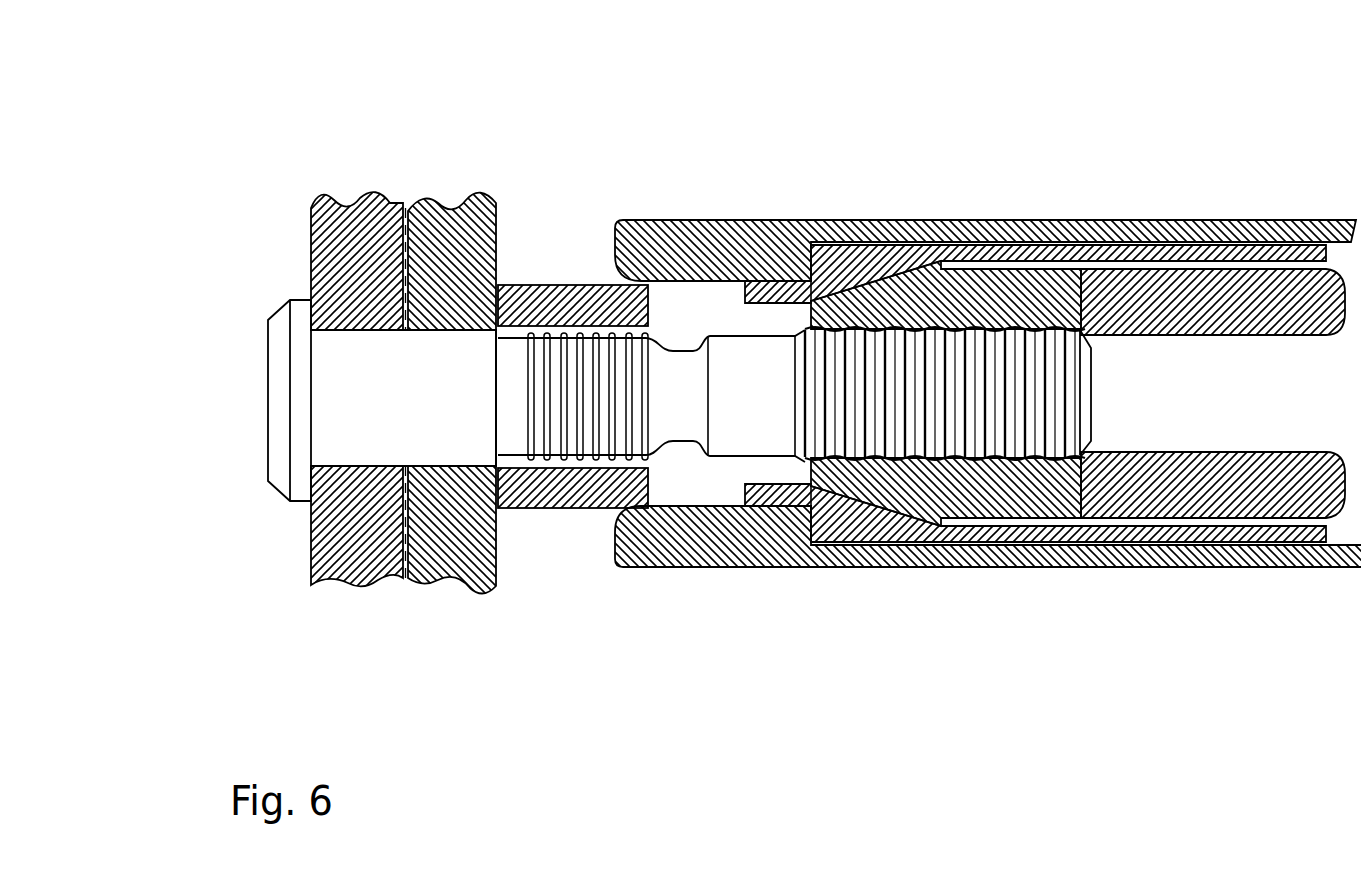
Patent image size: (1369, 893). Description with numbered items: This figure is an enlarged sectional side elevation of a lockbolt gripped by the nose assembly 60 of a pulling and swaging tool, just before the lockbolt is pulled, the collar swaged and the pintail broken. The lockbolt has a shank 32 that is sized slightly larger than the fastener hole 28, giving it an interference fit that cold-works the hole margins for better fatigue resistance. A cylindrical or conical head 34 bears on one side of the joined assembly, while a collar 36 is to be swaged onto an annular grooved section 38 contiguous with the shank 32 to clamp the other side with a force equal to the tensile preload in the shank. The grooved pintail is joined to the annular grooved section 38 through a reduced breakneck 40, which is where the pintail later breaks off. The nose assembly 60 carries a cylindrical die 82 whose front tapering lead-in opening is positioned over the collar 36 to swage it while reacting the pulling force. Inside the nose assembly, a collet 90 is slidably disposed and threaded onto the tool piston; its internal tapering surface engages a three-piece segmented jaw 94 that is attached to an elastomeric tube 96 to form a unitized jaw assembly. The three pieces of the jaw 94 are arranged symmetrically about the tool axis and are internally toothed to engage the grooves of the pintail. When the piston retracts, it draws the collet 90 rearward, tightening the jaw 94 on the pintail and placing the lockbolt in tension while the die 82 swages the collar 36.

The fastener hole 28 is at (430, 332).
The shank 32 is at (330, 426).
The head 34 is at (240, 342).
The collar 36 is at (540, 287).
The annular grooved section 38 is at (592, 452).
The reduced breakneck 40 is at (672, 347).
The nose assembly 60 is at (988, 409).
The die 82 is at (688, 533).
The collet 90 is at (886, 236).
The segmented jaw 94 is at (983, 290).
The elastomeric tube 96 is at (1240, 310).